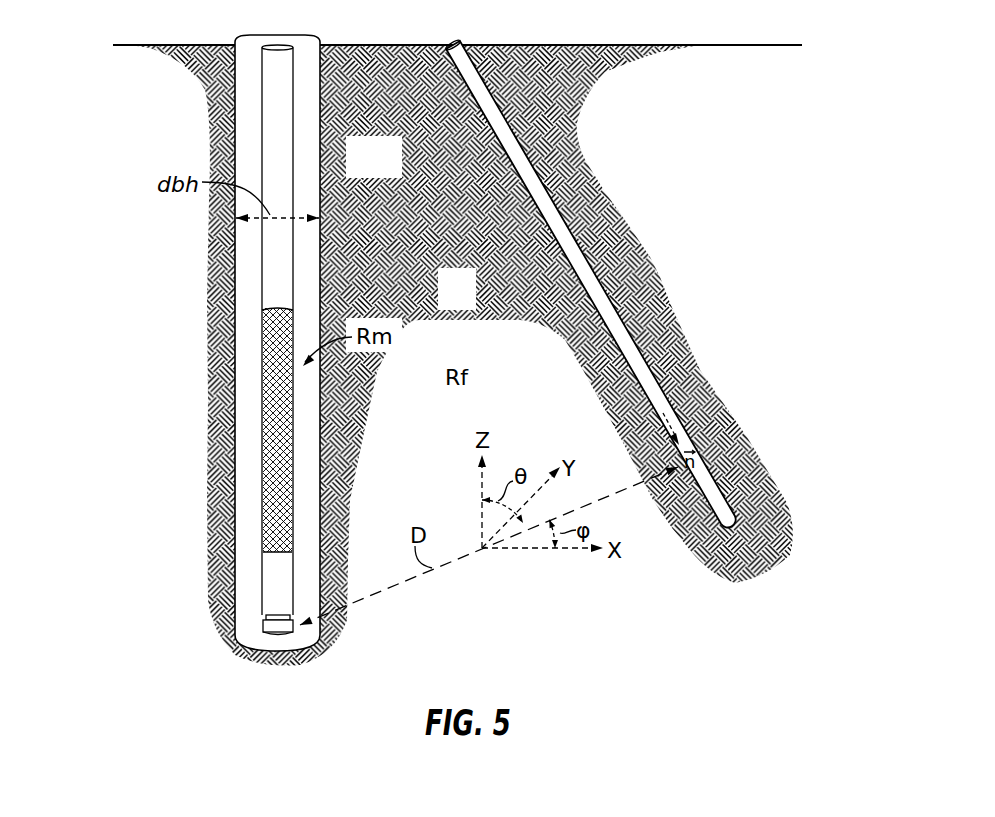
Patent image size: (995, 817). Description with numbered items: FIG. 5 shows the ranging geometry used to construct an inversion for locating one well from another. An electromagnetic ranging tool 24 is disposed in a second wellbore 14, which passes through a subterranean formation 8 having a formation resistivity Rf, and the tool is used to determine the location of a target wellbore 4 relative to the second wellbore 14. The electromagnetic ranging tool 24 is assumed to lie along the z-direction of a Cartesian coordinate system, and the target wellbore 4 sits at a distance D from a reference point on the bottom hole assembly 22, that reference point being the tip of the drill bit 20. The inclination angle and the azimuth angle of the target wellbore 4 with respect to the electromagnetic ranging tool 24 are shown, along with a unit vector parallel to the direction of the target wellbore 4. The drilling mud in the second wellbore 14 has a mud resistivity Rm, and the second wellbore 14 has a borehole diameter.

The target wellbore 4 is at (640, 350).
The subterranean formation 8 is at (465, 304).
The second wellbore 14 is at (322, 175).
The drill bit 20 is at (263, 622).
The bottom hole assembly 22 is at (253, 578).
The electromagnetic ranging tool 24 is at (270, 408).